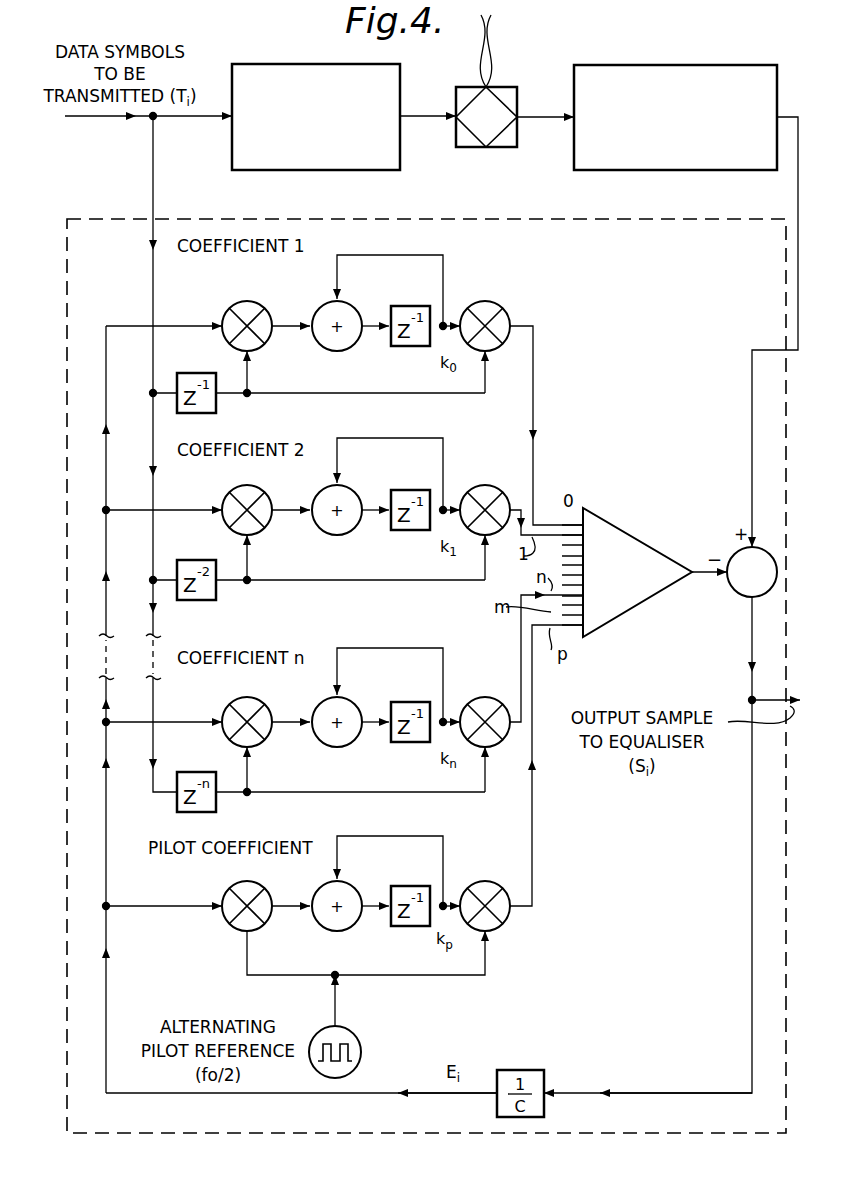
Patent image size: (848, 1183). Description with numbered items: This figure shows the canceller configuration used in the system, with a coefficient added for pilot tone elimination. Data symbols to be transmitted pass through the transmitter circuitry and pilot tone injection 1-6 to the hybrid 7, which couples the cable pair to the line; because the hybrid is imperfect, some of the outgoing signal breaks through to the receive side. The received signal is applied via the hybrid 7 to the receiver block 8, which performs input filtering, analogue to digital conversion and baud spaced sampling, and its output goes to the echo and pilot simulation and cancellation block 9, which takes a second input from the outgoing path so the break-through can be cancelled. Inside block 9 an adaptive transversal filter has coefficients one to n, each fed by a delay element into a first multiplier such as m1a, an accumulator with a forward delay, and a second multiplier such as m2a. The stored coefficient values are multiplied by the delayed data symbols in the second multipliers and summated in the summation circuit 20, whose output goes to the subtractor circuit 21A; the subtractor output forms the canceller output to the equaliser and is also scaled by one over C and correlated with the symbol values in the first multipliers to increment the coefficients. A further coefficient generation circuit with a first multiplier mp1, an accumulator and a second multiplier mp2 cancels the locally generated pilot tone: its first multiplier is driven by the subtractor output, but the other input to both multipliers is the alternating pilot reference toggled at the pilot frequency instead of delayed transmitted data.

The transmitter circuitry and pilot tone injection 1-6 is at (270, 172).
The hybrid 7 is at (519, 98).
The receiver block 8 is at (748, 162).
The echo and pilot simulation and cancellation block 9 is at (118, 218).
The summation circuit 20 is at (640, 548).
The subtractor circuit 21A is at (738, 588).
The first multiplier m1a is at (244, 312).
The second multiplier m2a is at (490, 312).
The first multiplier of pilot coefficient generation circuit mp1 is at (226, 913).
The second multiplier of pilot coefficient generation circuit mp2 is at (503, 914).